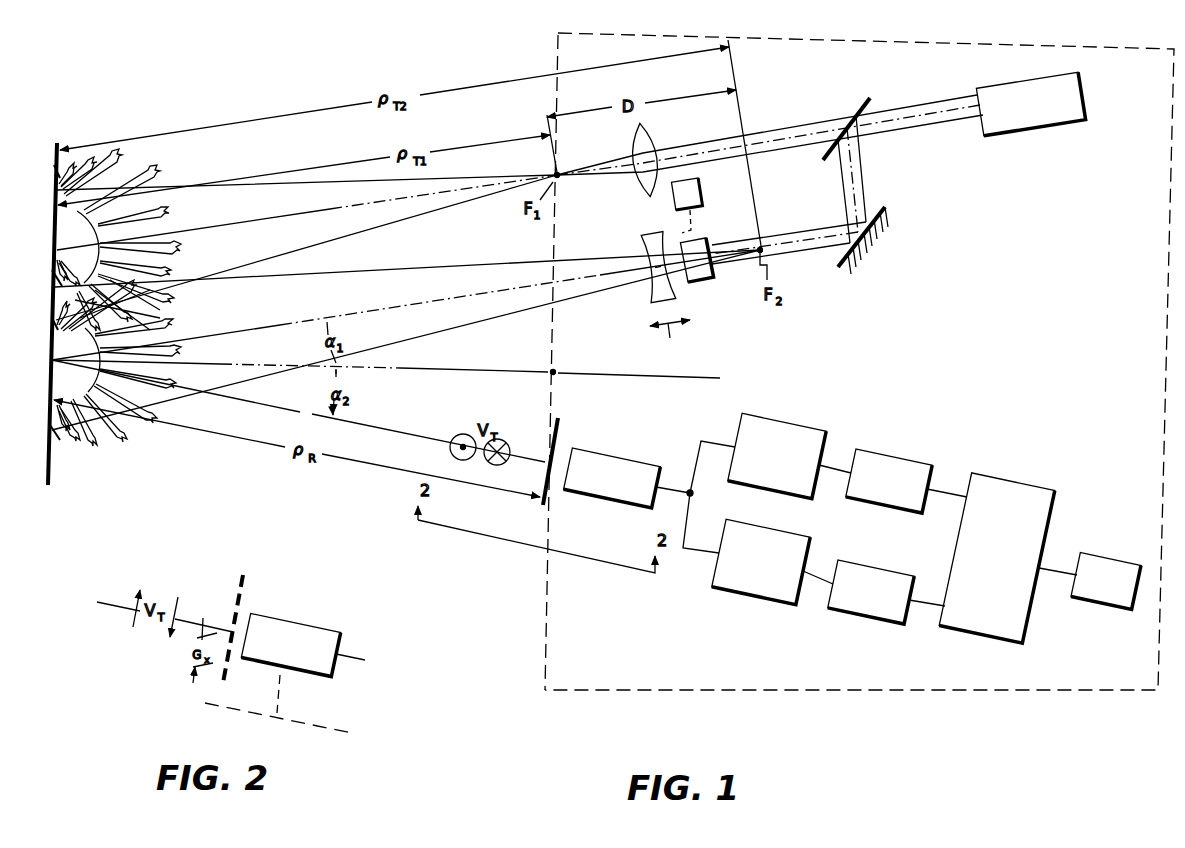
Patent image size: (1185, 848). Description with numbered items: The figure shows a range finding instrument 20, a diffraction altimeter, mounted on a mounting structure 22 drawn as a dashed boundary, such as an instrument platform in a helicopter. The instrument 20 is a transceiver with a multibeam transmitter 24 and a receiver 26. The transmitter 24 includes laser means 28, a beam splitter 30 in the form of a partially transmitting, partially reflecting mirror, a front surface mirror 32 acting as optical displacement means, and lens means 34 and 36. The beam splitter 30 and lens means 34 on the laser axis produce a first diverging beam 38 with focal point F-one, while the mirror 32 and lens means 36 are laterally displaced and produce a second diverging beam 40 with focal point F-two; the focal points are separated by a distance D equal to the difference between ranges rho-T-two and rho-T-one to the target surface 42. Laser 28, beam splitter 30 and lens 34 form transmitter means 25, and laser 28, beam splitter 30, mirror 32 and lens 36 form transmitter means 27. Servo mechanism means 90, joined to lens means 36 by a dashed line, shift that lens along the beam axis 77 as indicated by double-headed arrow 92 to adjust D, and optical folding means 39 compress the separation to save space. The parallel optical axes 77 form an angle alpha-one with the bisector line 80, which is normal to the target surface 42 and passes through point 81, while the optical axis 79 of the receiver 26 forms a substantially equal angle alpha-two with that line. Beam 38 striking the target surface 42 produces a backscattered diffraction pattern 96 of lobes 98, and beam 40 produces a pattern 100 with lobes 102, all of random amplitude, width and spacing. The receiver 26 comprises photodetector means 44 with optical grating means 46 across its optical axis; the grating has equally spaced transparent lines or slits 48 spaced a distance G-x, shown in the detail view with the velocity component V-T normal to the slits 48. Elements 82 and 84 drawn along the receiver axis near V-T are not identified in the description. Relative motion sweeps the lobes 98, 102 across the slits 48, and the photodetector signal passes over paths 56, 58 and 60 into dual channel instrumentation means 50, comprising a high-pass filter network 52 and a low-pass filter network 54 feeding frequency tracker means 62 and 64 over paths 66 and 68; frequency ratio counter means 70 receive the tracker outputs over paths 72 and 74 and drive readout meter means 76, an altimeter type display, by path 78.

In FIG. 1, the range finding instrument 20 is at (547, 44).
In FIG. 1, the mounting structure 22 is at (1160, 334).
In FIG. 2, the mounting structure 22 is at (356, 730).
In FIG. 1, the multibeam transmitter 24 is at (947, 90).
In FIG. 1, the transmitter means 25 is at (770, 135).
In FIG. 1, the receiver 26 is at (838, 418).
In FIG. 1, the transmitter means 27 is at (789, 248).
In FIG. 1, the laser means 28 is at (1050, 128).
In FIG. 1, the beam splitter means 30 is at (867, 96).
In FIG. 1, the front surface mirror 32 is at (846, 275).
In FIG. 1, the lens means 34 is at (634, 182).
In FIG. 1, the lens means 36 is at (641, 240).
In FIG. 1, the wave radiation beam 38 is at (545, 170).
In FIG. 1, the optical folding means 39 is at (706, 283).
In FIG. 1, the wave radiation beam 40 is at (527, 314).
In FIG. 1, the target surface 42 is at (47, 472).
In FIG. 1, the photodetector means 44 is at (622, 456).
In FIG. 2, the photodetector means 44 is at (311, 608).
In FIG. 1, the optical grating means 46 is at (565, 428).
In FIG. 2, the optical grating means 46 is at (245, 575).
In FIG. 2, the lines or slits 48 is at (242, 593).
In FIG. 1, the dual channel instrumentation means 50 is at (838, 667).
In FIG. 1, the high-pass filter network 52 is at (784, 412).
In FIG. 1, the low-pass filter network 54 is at (757, 608).
In FIG. 1, the path 56 is at (675, 486).
In FIG. 2, the path 56 is at (363, 632).
In FIG. 1, the path 58 is at (713, 440).
In FIG. 1, the path 60 is at (689, 551).
In FIG. 1, the frequency tracker means 62 is at (894, 457).
In FIG. 1, the frequency tracker means 64 is at (868, 618).
In FIG. 1, the path 66 is at (838, 464).
In FIG. 1, the path 68 is at (812, 583).
In FIG. 1, the frequency ratio counter means 70 is at (1010, 478).
In FIG. 1, the path 72 is at (949, 489).
In FIG. 1, the path 74 is at (921, 606).
In FIG. 1, the readout meter means 76 is at (1110, 557).
In FIG. 1, the optical axes 77 is at (243, 222).
In FIG. 1, the path 78 is at (1066, 570).
In FIG. 1, the optical axis 79 is at (396, 424).
In FIG. 1, the bisector line 80 is at (484, 366).
In FIG. 1, the point 81 is at (558, 368).
In FIG. 1, the scattering particle 82 is at (459, 434).
In FIG. 2, the scattering particle 82 is at (130, 618).
In FIG. 1, the target velocity vector 84 is at (503, 438).
In FIG. 2, the target velocity vector 84 is at (183, 604).
In FIG. 1, the servo mechanism means 90 is at (705, 189).
In FIG. 1, the double-headed arrow 92 is at (670, 341).
In FIG. 1, the backscattered diffraction pattern 96 is at (52, 170).
In FIG. 1, the lobes 98 is at (162, 184).
In FIG. 1, the backscattered wave radiation diffraction pattern 100 is at (52, 278).
In FIG. 1, the lobes 102 is at (176, 322).